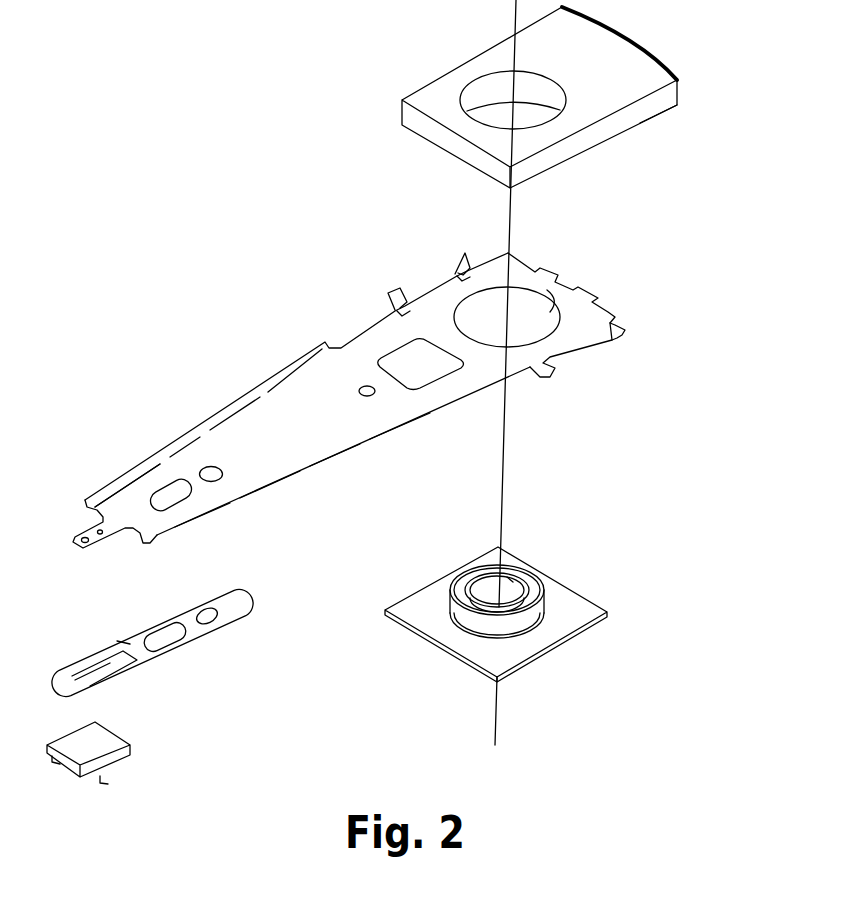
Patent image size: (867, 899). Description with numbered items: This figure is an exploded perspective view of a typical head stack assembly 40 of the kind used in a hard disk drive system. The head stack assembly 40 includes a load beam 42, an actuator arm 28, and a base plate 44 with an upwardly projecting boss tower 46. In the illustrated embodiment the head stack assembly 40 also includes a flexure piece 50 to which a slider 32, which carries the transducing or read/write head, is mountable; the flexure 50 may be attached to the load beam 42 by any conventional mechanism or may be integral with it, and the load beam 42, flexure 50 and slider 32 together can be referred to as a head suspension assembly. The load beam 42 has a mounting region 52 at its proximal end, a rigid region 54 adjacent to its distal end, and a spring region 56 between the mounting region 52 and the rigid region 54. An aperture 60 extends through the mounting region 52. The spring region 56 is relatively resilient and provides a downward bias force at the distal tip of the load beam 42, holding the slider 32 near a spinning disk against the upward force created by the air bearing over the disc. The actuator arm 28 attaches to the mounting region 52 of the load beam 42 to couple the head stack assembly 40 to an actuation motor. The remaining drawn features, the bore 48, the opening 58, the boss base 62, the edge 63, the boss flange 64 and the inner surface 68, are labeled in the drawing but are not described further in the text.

The actuator arm 28 is at (558, 116).
The slider 32 is at (117, 772).
The head stack assembly 40 is at (298, 181).
The load beam 42 is at (349, 391).
The base plate 44 is at (491, 612).
The boss tower 46 is at (471, 625).
The bore 48 is at (508, 580).
The flexure piece 50 is at (180, 658).
The mounting region 52 is at (437, 302).
The rigid region 54 is at (238, 430).
The spring region 56 is at (372, 345).
The opening 58 is at (504, 80).
The aperture 60 is at (553, 290).
The boss base 62 is at (398, 606).
The edge 63 is at (650, 117).
The boss flange 64 is at (452, 608).
The inner surface 68 is at (540, 88).